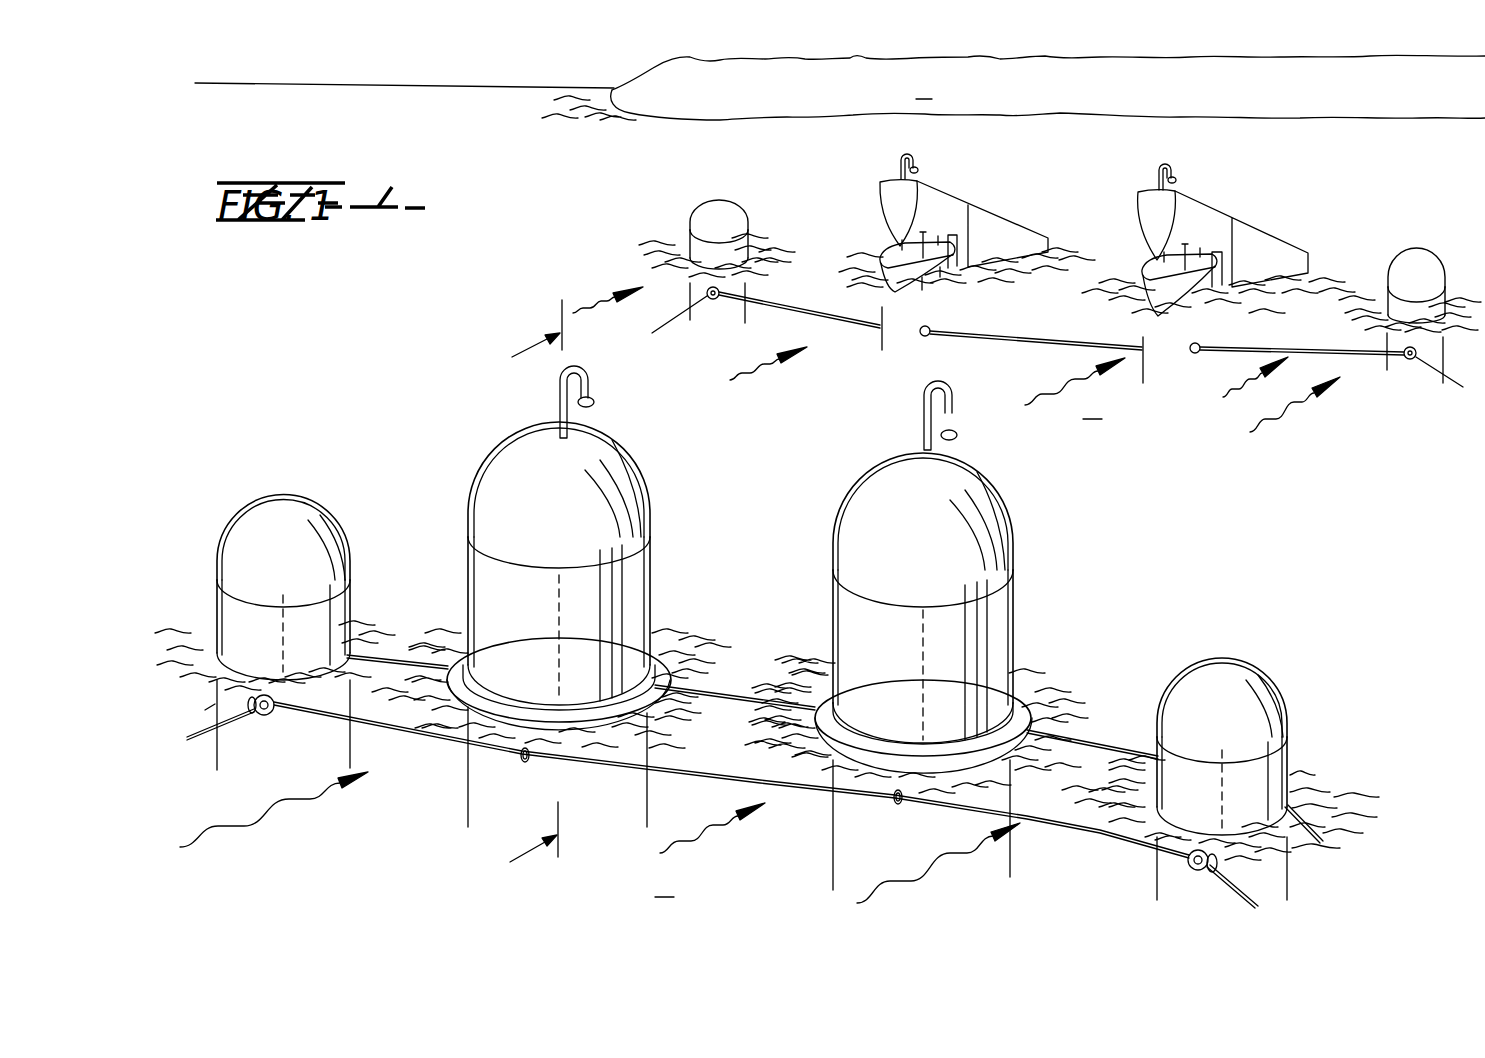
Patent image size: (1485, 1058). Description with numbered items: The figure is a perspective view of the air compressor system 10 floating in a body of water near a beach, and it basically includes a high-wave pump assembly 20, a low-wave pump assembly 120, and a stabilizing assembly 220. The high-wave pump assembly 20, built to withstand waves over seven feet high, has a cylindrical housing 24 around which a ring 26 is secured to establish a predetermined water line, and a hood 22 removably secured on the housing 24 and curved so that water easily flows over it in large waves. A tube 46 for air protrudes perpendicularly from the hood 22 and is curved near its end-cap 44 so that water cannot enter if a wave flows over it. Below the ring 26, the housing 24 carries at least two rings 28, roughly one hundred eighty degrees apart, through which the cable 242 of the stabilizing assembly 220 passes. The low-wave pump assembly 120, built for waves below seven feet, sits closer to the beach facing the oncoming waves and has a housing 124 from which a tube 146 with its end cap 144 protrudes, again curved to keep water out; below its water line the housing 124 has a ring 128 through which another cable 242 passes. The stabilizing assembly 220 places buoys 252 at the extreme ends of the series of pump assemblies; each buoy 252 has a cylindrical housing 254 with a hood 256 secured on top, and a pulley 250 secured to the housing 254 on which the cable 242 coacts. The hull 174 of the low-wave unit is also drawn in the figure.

The air compressor system 10 is at (350, 382).
The high-wave pump assembly 20 is at (661, 470).
The hood 22 is at (531, 507).
The cylindrical housing 24 is at (525, 646).
The ring 26 is at (650, 670).
The rings 28 is at (525, 764).
The end-cap 44 is at (593, 405).
The tube 46 is at (557, 388).
The low-wave pump assembly 120 is at (1002, 202).
The housing 124 is at (1025, 254).
The ring 128 is at (925, 337).
The end cap 144 is at (915, 167).
The tube 146 is at (900, 168).
The hull 174 is at (880, 273).
The stabilizing assembly 220 is at (1306, 739).
The cable 242 is at (1080, 833).
The pulley 250 is at (262, 718).
The buoys 252 is at (230, 501).
The cylindrical housing 254 is at (275, 646).
The hood 256 is at (292, 551).